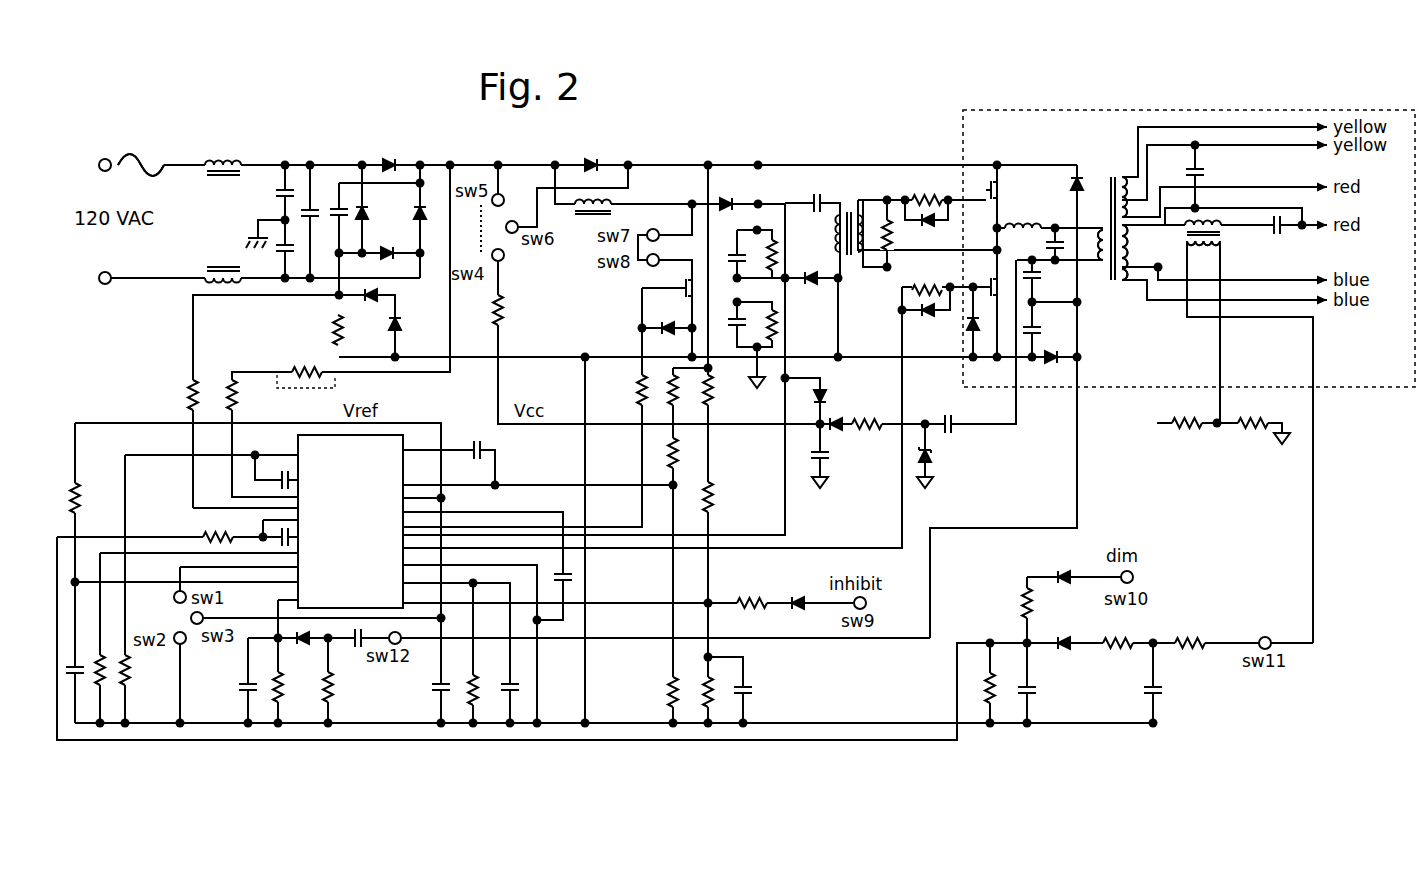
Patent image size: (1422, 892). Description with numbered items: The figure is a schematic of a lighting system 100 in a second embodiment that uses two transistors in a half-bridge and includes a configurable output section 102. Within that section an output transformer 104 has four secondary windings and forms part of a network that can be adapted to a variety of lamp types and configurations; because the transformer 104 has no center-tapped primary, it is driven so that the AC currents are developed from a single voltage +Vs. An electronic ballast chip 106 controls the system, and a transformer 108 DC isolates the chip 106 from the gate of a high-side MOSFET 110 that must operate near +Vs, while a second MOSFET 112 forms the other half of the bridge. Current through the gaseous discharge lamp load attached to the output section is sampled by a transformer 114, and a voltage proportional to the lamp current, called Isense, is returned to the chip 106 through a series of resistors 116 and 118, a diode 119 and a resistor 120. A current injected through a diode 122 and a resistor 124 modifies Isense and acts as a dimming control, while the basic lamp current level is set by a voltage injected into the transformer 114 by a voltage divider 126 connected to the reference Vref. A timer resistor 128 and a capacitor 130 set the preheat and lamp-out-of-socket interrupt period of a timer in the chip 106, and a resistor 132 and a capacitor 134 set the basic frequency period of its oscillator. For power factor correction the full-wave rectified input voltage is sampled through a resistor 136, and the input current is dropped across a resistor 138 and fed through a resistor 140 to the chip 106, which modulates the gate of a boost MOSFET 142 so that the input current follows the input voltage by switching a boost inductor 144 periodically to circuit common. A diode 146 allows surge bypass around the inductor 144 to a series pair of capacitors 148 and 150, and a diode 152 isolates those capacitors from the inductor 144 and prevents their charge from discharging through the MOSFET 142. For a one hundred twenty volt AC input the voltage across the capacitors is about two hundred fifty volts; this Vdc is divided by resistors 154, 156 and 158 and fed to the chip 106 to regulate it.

The system 100 is at (302, 131).
The configurable output section 102 is at (1302, 110).
The output transformer 104 is at (1112, 282).
The electronic ballast chip 106 is at (350, 521).
The transformer 108 is at (843, 213).
The high-side MOSFET 110 is at (1011, 190).
The second MOSFET 112 is at (984, 280).
The transformer 114 is at (1222, 240).
The resistor 116 is at (1189, 664).
The resistor 118 is at (1117, 656).
The diode 119 is at (1063, 636).
The resistor 120 is at (210, 531).
The diode 122 is at (1064, 568).
The resistor 124 is at (1020, 607).
The voltage divider 126 is at (1264, 443).
The timer resistor 128 is at (466, 705).
The capacitor 130 is at (508, 697).
The resistor 132 is at (100, 481).
The capacitor 134 is at (70, 680).
The resistor 136 is at (229, 388).
The resistor 138 is at (334, 335).
The resistor 140 is at (188, 399).
The boost MOSFET 142 is at (644, 288).
The boost inductor 144 is at (610, 210).
The diode 146 is at (597, 152).
The capacitor 148 is at (728, 322).
The capacitor 150 is at (730, 255).
The diode 152 is at (727, 195).
The resistor 154 is at (640, 402).
The resistor 156 is at (680, 450).
The resistor 158 is at (668, 699).